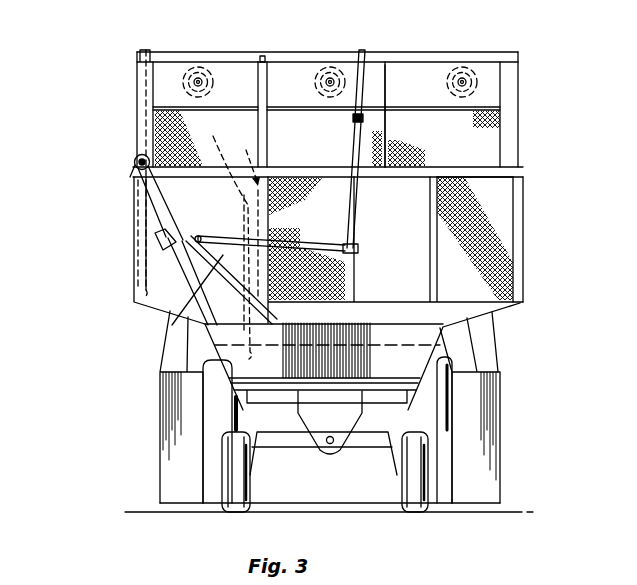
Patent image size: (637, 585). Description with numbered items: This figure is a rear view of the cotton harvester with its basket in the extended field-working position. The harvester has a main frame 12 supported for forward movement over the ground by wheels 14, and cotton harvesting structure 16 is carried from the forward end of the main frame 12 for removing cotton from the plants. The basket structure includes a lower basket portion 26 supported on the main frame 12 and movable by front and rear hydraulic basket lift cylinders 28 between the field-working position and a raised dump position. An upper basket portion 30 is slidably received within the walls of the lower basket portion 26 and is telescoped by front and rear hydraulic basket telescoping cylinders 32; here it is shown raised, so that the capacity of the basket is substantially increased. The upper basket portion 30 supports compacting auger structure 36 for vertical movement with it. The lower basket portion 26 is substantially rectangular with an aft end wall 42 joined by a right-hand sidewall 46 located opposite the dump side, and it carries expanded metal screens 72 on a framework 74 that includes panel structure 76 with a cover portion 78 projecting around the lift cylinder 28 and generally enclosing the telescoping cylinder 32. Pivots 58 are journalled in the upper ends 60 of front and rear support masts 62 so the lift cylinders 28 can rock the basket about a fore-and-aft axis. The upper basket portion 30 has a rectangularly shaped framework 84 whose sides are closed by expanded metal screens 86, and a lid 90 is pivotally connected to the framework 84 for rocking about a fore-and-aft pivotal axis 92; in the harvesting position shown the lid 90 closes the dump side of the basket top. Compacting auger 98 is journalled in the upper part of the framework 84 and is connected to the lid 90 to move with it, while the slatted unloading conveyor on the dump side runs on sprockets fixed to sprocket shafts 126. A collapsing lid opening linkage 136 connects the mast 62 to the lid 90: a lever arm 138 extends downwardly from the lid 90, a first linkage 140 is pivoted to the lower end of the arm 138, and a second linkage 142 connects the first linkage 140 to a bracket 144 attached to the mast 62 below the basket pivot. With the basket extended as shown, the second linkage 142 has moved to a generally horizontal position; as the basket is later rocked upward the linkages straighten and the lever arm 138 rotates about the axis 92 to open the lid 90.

The main frame 12 is at (285, 398).
The wheels 14 is at (212, 505).
The cotton harvesting structure 16 is at (136, 413).
The lower basket portion 26 is at (160, 298).
The hydraulic basket lift cylinders 28 is at (225, 237).
The upper basket portion 30 is at (137, 90).
The hydraulic basket telescoping cylinders 32 is at (244, 156).
The compacting auger structure 36 is at (492, 82).
The aft end wall 42 is at (509, 191).
The right-hand sidewall 46 is at (524, 226).
The pivots 58 is at (134, 162).
The upper ends of support masts 60 is at (135, 155).
The support masts 62 is at (162, 246).
The expanded metal screens 72 is at (508, 278).
The framework 74 is at (512, 174).
The panel structure 76 is at (173, 188).
The cover portion 78 is at (172, 318).
The rectangularly shaped framework 84 is at (502, 53).
The expanded metal screens 86 is at (493, 143).
The lid 90 is at (244, 52).
The pivotal axis 92 is at (363, 50).
The compacting auger 98 is at (200, 78).
The sprocket shafts 126 is at (144, 50).
The collapsing lid opening linkage 136 is at (372, 232).
The lever arm 138 is at (367, 88).
The first linkage 140 is at (353, 146).
The second linkage 142 is at (232, 236).
The bracket 144 is at (172, 250).